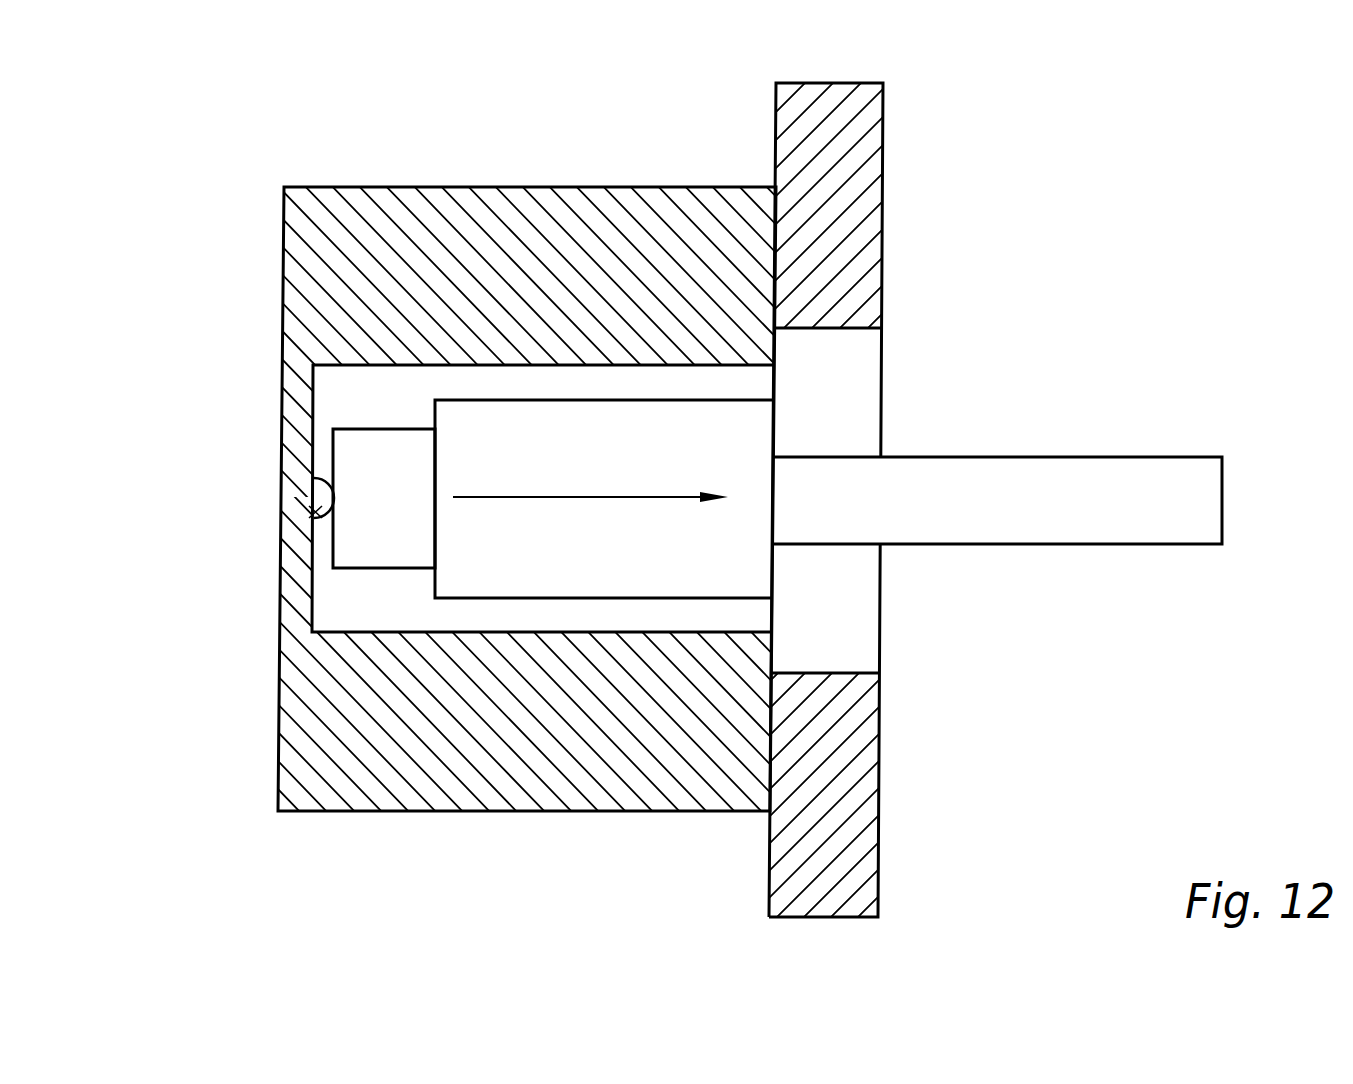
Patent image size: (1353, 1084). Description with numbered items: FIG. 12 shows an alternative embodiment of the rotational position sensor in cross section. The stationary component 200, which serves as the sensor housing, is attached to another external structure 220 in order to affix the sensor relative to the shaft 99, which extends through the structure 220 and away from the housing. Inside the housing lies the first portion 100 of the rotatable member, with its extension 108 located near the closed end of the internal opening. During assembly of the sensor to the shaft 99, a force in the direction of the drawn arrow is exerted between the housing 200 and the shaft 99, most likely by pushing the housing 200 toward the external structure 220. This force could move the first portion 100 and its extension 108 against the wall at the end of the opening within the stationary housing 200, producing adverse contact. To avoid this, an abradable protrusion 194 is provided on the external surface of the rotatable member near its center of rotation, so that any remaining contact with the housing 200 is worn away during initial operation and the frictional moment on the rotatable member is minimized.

The stationary component 200 is at (330, 217).
The external structure 220 is at (853, 232).
The shaft 99 is at (1028, 485).
The first portion 100 is at (460, 430).
The extension 108 is at (356, 484).
The protrusion 194 is at (318, 510).